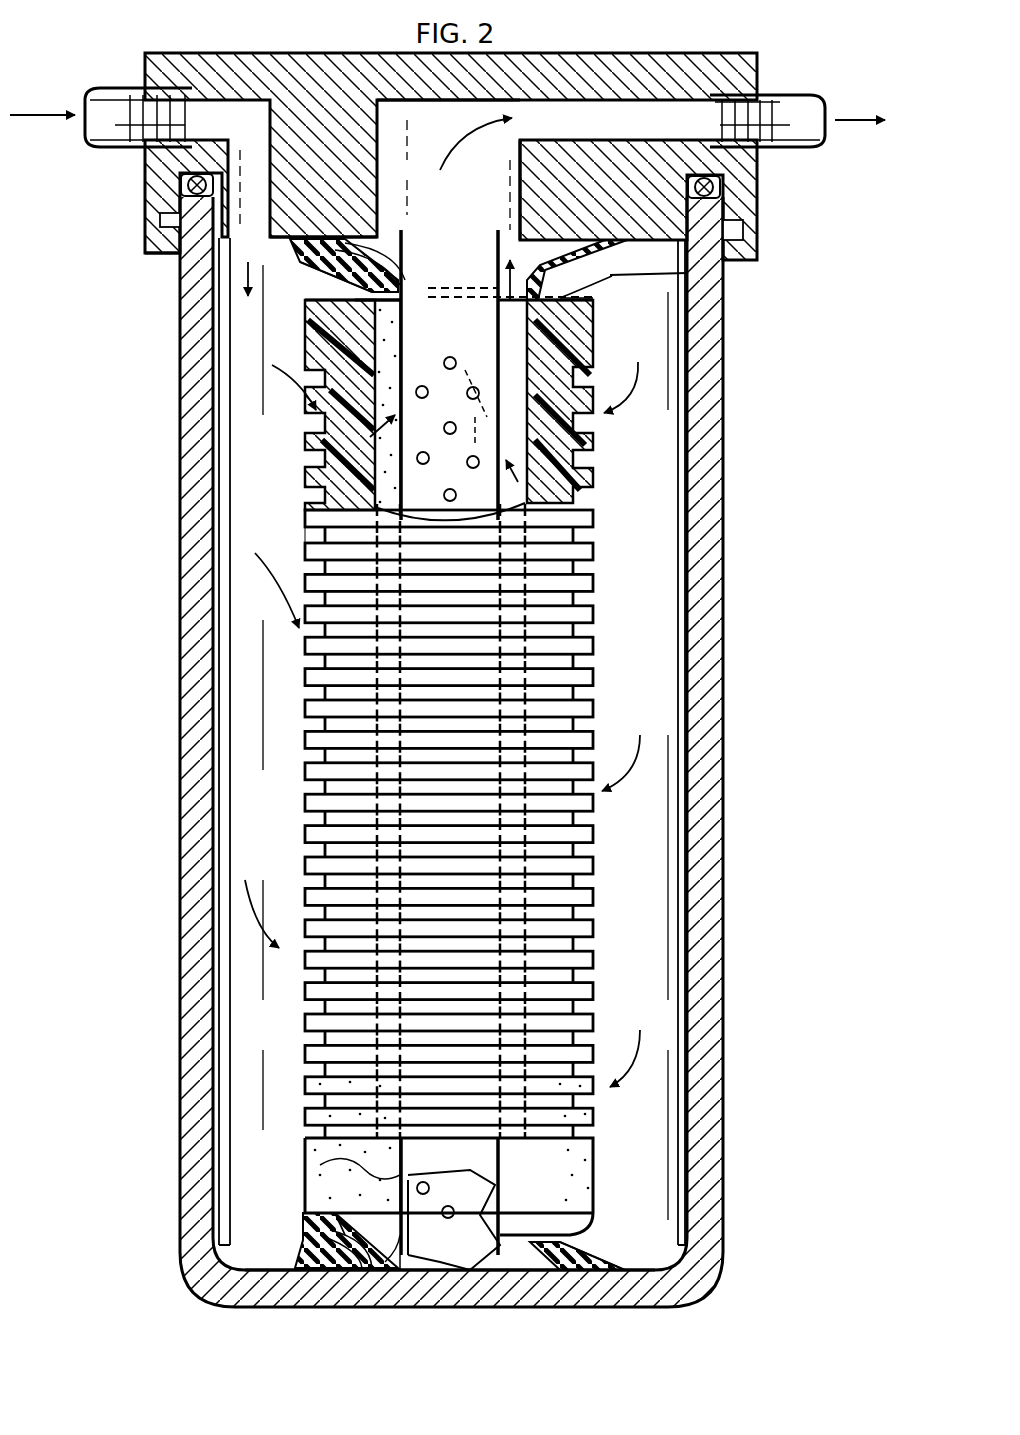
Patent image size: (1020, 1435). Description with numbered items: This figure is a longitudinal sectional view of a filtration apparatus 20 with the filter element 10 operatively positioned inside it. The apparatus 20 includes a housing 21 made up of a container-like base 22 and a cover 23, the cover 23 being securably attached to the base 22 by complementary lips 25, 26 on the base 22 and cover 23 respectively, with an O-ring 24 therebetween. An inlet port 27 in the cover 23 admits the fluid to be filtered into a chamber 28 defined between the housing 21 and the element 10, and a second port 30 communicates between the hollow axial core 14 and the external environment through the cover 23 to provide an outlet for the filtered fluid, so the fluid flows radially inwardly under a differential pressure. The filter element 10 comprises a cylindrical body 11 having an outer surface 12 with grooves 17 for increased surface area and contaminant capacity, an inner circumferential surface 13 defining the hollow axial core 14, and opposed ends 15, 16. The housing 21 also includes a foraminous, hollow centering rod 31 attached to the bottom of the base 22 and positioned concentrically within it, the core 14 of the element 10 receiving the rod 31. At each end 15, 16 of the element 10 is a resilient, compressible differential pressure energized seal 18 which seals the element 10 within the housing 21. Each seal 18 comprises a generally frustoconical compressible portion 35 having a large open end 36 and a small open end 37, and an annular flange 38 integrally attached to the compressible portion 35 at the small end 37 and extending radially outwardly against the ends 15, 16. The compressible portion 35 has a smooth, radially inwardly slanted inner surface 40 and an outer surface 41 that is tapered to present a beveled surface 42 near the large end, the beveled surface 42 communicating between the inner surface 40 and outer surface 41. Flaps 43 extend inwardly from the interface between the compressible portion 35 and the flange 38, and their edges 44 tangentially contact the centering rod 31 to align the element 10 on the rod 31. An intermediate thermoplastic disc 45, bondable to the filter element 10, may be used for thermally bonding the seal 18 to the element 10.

The filter element 10 is at (610, 487).
The cylindrical structure or body 11 is at (600, 709).
The outer surface 12 is at (593, 833).
The inner circumferential surface 13 is at (375, 386).
The hollow axial core 14 is at (513, 358).
The end 15 is at (570, 317).
The end 16 is at (585, 1173).
The grooves 17 is at (325, 503).
The differential pressure energized seal 18 is at (335, 232).
The filtration apparatus 20 is at (770, 386).
The housing 21 is at (178, 625).
The base 22 is at (362, 1300).
The cover 23 is at (680, 53).
The O-ring 24 is at (702, 190).
The lip 25 is at (173, 225).
The lip 26 is at (170, 250).
The inlet port 27 is at (112, 100).
The chamber 28 is at (250, 692).
The second port 30 is at (792, 103).
The centering rod 31 is at (483, 448).
The compressible portion 35 is at (745, 246).
The large open end 36 is at (338, 232).
The small open end 37 is at (580, 318).
The annular flange 38 is at (284, 272).
The inner surface 40 is at (385, 228).
The outer surface 41 is at (612, 276).
The beveled surface 42 is at (293, 247).
The flaps 43 is at (368, 295).
The edges 44 is at (461, 314).
The thermoplastic disc 45 is at (378, 382).